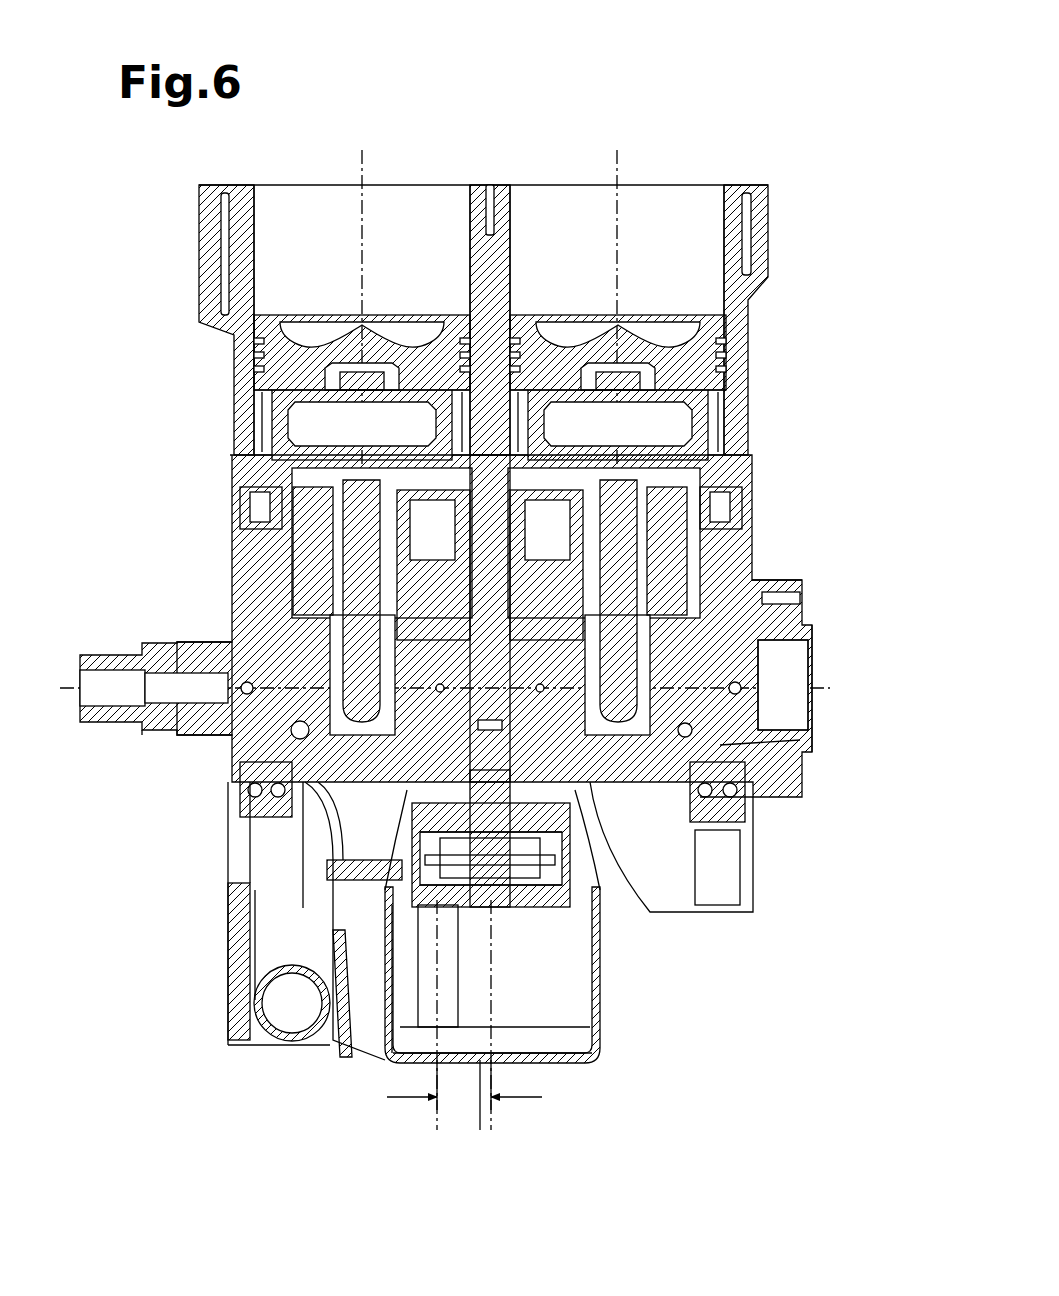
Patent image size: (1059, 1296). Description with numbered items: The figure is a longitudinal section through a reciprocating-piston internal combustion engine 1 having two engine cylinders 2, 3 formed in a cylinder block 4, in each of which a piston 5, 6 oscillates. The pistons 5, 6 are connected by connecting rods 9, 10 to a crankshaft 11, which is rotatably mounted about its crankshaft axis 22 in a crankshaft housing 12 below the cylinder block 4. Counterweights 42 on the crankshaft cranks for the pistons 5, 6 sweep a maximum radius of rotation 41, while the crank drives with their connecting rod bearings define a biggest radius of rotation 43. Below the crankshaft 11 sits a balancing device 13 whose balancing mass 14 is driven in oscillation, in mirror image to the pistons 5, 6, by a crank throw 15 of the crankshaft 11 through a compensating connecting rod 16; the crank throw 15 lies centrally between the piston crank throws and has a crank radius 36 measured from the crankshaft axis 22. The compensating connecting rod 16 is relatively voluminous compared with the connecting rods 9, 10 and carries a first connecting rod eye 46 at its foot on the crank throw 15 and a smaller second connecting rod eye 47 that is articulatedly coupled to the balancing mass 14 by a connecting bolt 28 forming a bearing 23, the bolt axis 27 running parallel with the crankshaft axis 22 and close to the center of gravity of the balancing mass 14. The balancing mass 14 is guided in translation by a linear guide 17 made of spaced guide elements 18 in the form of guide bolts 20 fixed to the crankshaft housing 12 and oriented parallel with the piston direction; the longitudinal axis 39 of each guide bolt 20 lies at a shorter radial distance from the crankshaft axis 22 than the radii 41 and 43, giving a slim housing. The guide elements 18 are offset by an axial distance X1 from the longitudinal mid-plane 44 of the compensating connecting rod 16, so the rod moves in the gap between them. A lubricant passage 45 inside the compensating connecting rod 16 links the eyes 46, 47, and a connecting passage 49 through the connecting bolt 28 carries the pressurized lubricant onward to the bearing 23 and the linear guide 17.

The reciprocating-piston internal combustion engine 1 is at (703, 100).
The engine cylinder 2 is at (238, 377).
The engine cylinder 3 is at (738, 372).
The cylinder block 4 is at (773, 228).
The piston 5 is at (270, 312).
The piston 6 is at (527, 312).
The connecting rod 9 is at (285, 590).
The connecting rod 10 is at (618, 572).
The crankshaft 11 is at (168, 735).
The crankshaft housing 12 is at (743, 530).
The balancing device 13 is at (330, 856).
The balancing mass 14 is at (535, 900).
The crank throw 15 is at (345, 590).
The compensating connecting rod 16 is at (812, 692).
The linear guide 17 is at (480, 1130).
The guide element 18 is at (340, 1040).
The guide bolt 20 is at (390, 1058).
The crankshaft axis 22 is at (102, 636).
The bearing 23 is at (590, 835).
The bolt axis 27 is at (500, 910).
The connecting bolt 28 is at (590, 885).
The crank radius 36 is at (805, 630).
The longitudinal axis 39 is at (437, 1062).
The maximum radius of rotation 41 is at (808, 652).
The counterweight 42 is at (268, 500).
The biggest radius of rotation 43 is at (380, 840).
The longitudinal mid-plane 44 is at (512, 1062).
The lubricant passage 45 is at (800, 740).
The first connecting rod eye 46 is at (365, 570).
The second connecting rod eye 47 is at (485, 910).
The connecting passage 49 is at (565, 858).
The axial distance X1 is at (465, 1098).